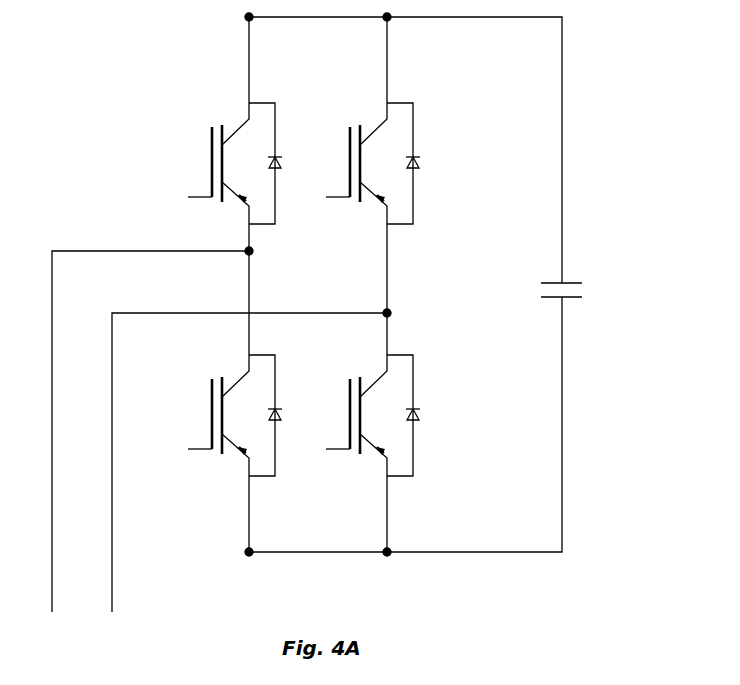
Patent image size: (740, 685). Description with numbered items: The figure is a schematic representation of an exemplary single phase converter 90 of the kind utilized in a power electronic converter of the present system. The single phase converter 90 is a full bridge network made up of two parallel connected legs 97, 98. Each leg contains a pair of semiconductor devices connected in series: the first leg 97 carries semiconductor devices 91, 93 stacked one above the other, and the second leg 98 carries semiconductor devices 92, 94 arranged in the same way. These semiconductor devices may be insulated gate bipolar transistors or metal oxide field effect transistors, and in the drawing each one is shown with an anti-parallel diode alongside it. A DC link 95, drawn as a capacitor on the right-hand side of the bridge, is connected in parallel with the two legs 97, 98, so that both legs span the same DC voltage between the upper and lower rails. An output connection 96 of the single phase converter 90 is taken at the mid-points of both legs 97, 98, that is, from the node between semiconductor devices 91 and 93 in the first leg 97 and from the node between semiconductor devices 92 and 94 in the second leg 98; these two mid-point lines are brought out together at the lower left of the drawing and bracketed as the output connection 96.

The single phase converter 90 is at (94, 25).
The semiconductor device 91 is at (204, 122).
The semiconductor device 92 is at (421, 129).
The semiconductor device 93 is at (204, 382).
The semiconductor device 94 is at (422, 386).
The DC link 95 is at (594, 282).
The output connection 96 is at (118, 618).
The leg 97 is at (249, 62).
The leg 98 is at (387, 62).